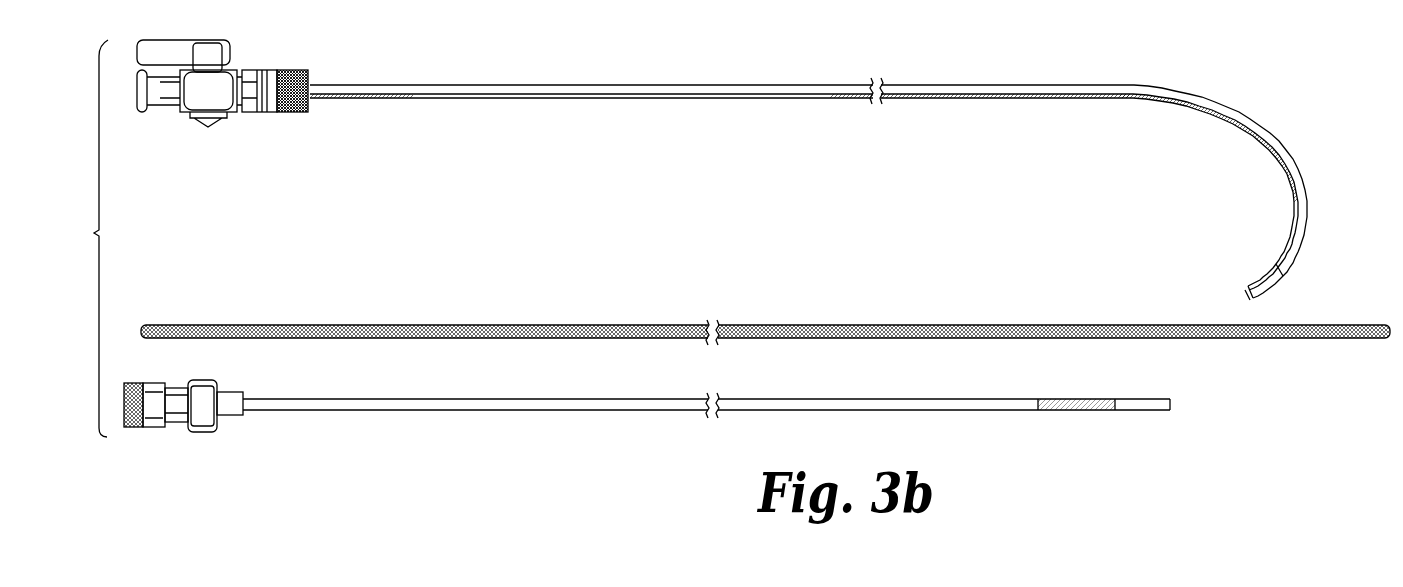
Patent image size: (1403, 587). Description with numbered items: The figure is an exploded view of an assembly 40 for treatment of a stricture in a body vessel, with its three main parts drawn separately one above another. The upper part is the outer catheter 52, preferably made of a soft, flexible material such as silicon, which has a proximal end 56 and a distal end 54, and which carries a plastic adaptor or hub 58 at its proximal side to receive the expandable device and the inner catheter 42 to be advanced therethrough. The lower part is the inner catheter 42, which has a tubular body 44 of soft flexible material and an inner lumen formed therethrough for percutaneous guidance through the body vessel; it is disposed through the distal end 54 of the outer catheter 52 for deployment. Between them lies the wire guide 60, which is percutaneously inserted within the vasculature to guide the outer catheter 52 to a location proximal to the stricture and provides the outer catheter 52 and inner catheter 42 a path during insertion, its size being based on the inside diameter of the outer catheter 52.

The assembly 40 is at (302, 54).
The inner catheter 42 is at (402, 403).
The tubular body 44 is at (310, 403).
The outer catheter 52 is at (805, 85).
The distal end 54 is at (1247, 298).
The proximal end 56 is at (440, 85).
The plastic adaptor or hub 58 is at (222, 98).
The wire guide 60 is at (577, 325).